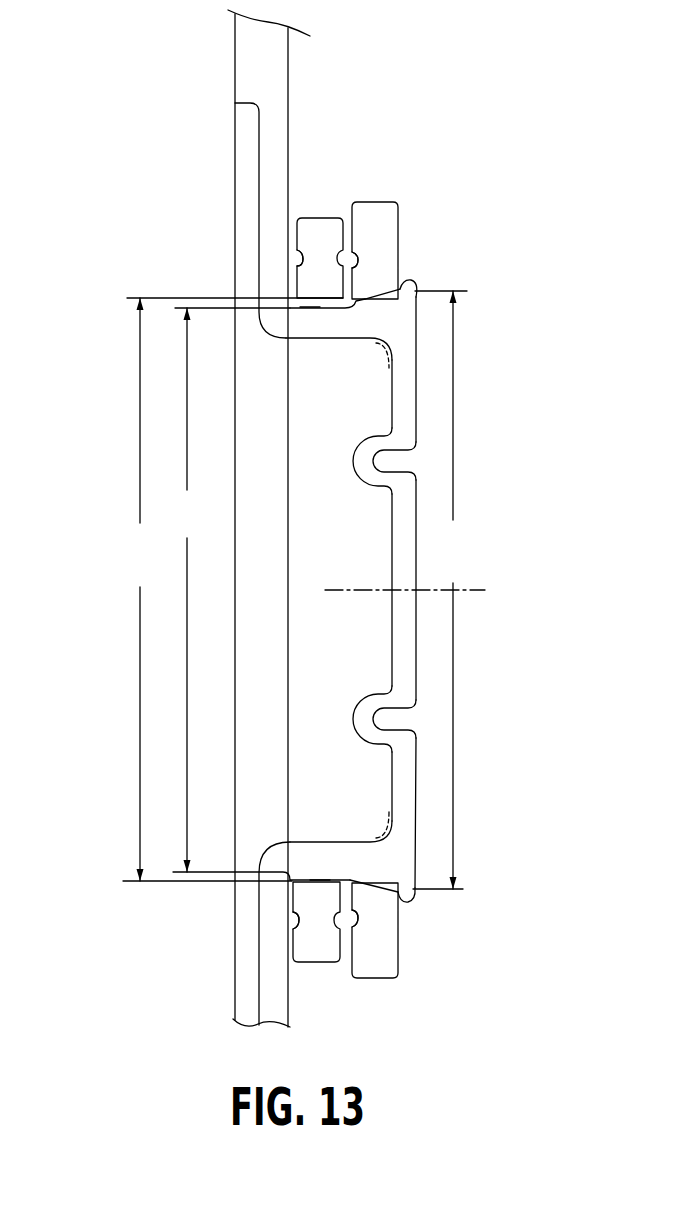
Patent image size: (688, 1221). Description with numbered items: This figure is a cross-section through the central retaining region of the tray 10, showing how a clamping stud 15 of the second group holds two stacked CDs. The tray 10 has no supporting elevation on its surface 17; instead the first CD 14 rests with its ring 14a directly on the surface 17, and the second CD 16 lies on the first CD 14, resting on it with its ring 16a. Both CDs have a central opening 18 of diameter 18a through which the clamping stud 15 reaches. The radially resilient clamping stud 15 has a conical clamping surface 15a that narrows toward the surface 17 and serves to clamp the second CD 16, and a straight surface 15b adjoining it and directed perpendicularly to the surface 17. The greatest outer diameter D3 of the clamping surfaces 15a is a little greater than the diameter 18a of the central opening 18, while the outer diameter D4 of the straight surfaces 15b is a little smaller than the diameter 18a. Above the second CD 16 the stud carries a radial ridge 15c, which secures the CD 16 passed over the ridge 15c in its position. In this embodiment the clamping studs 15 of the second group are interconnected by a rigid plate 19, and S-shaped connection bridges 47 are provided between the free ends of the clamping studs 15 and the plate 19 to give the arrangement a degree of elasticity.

The tray 10 is at (233, 195).
The surface of the tray 17 is at (290, 98).
The central opening 18 is at (330, 300).
The diameter of the central opening 18a is at (233, 589).
The clamping studs of the second group 15 is at (352, 323).
The clamping surfaces 15a is at (367, 305).
The straight surfaces 15b is at (310, 307).
The radial ridge 15c is at (417, 283).
The rigid plate 19 is at (402, 622).
The S-shaped connection bridges 47 is at (362, 462).
The first CD 14 is at (333, 236).
The ring of the first CD 14a is at (297, 258).
The second CD 16 is at (391, 233).
The ring of the second CD 16a is at (350, 262).
The outer diameter of the straight surfaces D4 is at (231, 594).
The greatest outer diameter of the clamping surfaces D3 is at (440, 590).